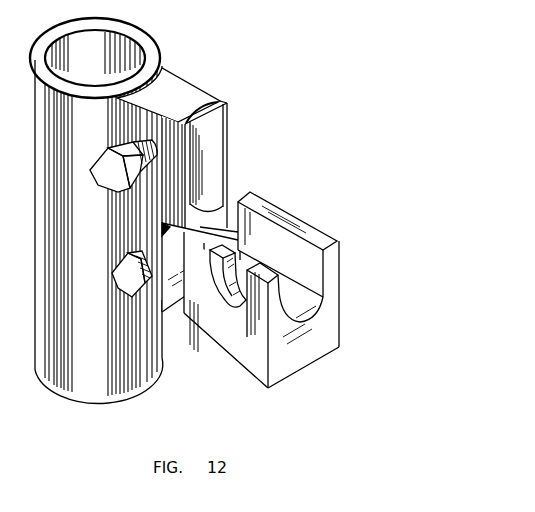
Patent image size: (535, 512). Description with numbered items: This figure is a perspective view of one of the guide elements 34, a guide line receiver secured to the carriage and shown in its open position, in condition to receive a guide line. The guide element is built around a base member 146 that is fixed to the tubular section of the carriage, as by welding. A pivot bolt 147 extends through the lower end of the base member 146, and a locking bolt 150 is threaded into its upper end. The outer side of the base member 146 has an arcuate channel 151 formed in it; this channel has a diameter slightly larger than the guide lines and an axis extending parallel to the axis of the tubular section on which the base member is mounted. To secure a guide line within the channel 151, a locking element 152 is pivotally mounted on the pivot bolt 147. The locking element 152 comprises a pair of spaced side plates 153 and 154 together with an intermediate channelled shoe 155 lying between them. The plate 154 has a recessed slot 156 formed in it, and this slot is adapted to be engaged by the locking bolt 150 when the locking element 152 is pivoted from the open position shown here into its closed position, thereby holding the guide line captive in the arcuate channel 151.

The guide element 34 is at (190, 70).
The base member 146 is at (205, 93).
The arcuate channel 151 is at (208, 131).
The locking bolt 150 is at (107, 178).
The pivot bolt 147 is at (126, 274).
The locking element 152 is at (345, 288).
The side plate 153 is at (284, 217).
The side plate 154 is at (254, 371).
The channelled shoe 155 is at (308, 354).
The recessed slot 156 is at (243, 318).